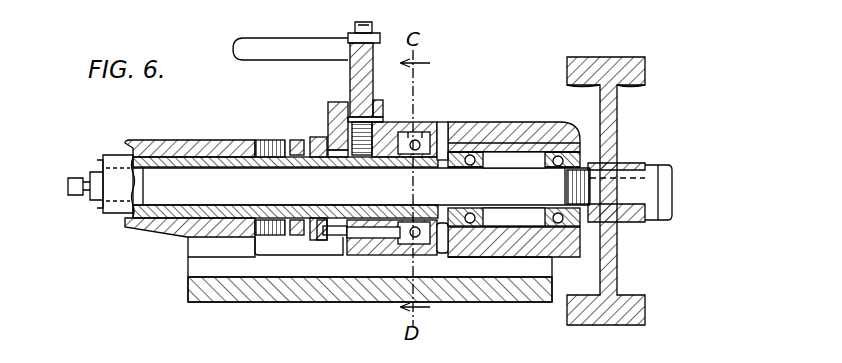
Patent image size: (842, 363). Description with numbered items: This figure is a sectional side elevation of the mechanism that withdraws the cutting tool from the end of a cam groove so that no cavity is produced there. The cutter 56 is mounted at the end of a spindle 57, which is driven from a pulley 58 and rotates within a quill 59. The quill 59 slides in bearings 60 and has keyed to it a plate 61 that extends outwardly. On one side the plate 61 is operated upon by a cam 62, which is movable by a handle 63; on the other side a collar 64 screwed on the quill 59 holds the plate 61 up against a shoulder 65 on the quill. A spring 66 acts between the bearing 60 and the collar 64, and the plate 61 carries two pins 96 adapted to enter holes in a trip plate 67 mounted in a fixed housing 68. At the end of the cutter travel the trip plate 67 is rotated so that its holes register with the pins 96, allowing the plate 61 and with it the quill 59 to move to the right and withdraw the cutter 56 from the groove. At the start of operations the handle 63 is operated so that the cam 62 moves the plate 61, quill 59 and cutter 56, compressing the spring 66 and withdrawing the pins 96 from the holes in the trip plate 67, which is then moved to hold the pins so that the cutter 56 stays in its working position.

The cutter 56 is at (72, 177).
The spindle 57 is at (361, 187).
The pulley 58 is at (603, 60).
The quill 59 is at (173, 222).
The bearings 60 is at (192, 141).
The plate 61 is at (332, 102).
The cam 62 is at (383, 107).
The handle 63 is at (275, 45).
The collar 64 is at (327, 136).
The shoulder 65 is at (338, 152).
The spring 66 is at (258, 141).
The trip plate 67 is at (412, 130).
The fixed housing 68 is at (442, 127).
The pins 96 is at (375, 238).